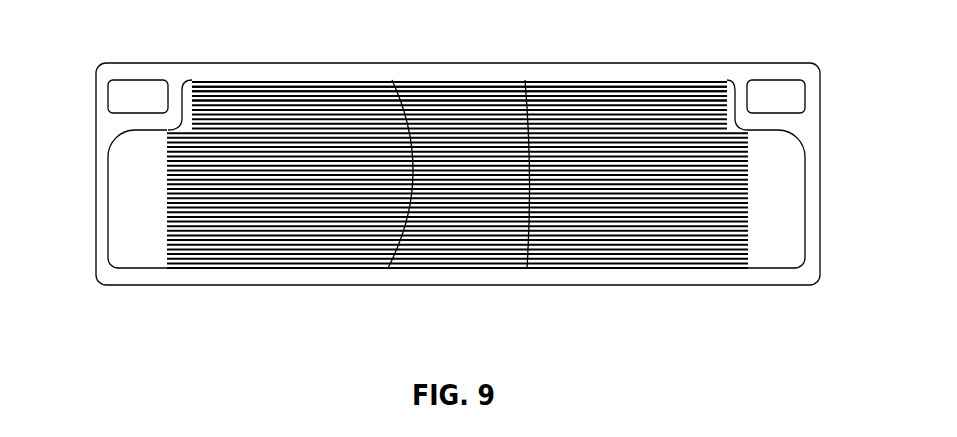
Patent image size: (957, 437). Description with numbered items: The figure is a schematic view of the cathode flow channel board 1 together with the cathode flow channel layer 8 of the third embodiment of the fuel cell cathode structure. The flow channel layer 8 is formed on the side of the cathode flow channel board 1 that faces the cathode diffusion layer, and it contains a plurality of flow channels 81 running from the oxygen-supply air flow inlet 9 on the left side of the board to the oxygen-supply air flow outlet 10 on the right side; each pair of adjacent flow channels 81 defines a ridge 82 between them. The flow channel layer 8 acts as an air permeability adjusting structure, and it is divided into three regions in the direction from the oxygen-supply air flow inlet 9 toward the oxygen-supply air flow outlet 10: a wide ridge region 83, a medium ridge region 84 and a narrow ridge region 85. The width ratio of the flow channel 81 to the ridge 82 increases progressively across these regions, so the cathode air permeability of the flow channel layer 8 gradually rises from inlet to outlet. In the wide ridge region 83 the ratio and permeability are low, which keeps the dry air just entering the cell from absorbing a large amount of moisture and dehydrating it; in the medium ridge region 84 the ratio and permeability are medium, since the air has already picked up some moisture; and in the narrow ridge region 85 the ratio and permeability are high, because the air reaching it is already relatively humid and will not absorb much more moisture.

The cathode flow channel board 1 is at (133, 75).
The flow channel layer 8 is at (730, 100).
The flow channel 81 is at (323, 90).
The ridge 82 is at (273, 88).
The wide ridge region 83 is at (283, 243).
The medium ridge region 84 is at (460, 243).
The narrow ridge region 85 is at (632, 247).
The oxygen-supply air flow inlet 9 is at (133, 203).
The oxygen-supply air flow outlet 10 is at (780, 200).